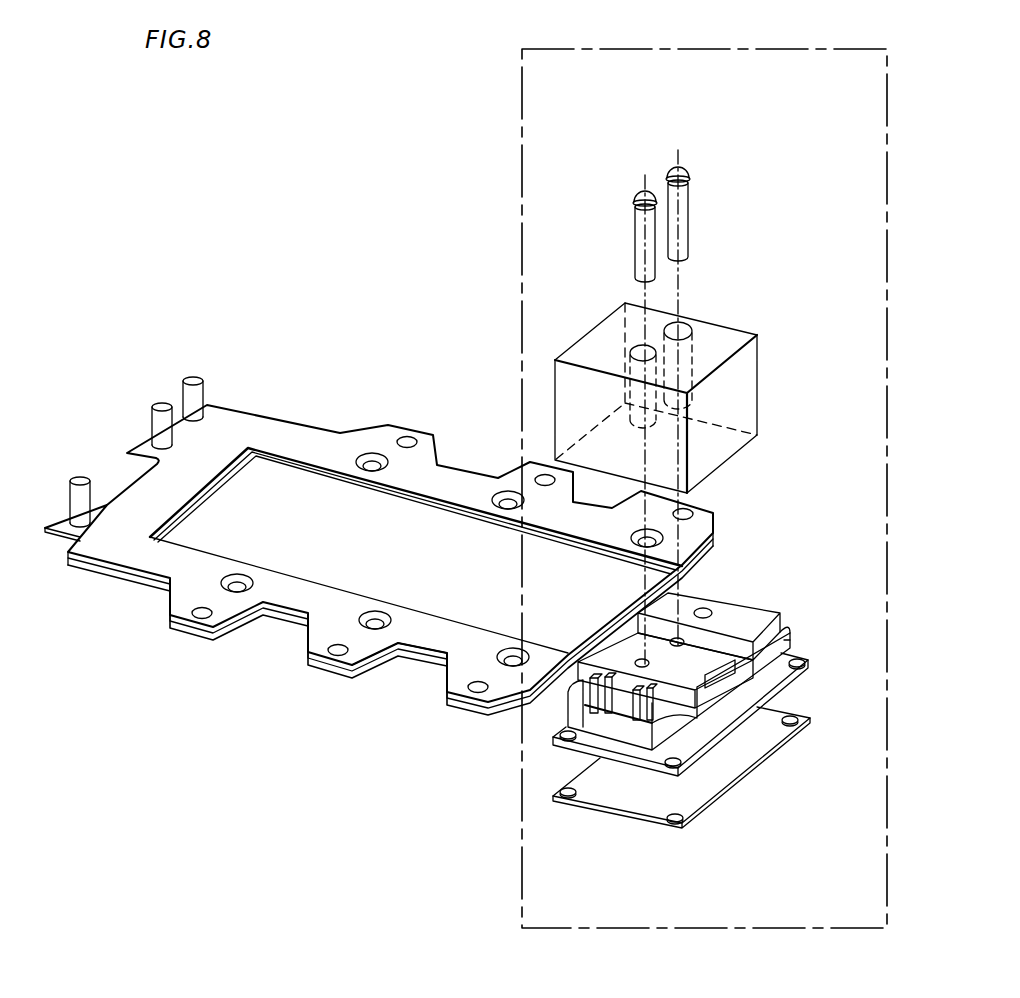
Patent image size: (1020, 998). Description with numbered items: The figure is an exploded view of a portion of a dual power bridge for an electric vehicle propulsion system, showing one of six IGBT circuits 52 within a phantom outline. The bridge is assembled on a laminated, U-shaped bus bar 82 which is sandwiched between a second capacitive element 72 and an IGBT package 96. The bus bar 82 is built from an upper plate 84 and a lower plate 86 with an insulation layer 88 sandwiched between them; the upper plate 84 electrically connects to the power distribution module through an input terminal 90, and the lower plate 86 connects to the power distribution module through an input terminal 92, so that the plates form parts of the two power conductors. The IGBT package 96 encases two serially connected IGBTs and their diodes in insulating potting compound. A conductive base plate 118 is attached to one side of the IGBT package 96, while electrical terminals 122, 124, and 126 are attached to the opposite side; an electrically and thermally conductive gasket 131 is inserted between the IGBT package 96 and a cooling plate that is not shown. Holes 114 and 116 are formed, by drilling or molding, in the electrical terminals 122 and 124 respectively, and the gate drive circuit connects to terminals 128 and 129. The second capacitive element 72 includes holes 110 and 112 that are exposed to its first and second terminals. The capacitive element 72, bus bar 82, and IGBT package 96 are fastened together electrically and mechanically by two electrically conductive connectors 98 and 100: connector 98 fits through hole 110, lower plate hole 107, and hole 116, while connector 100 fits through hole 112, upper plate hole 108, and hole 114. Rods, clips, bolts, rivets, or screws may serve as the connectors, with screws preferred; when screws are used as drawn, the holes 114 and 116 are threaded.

The IGBT circuit 52 is at (530, 898).
The second capacitive element 72 is at (679, 391).
The laminated bus bar 82 is at (118, 620).
The upper plate 84 is at (228, 613).
The lower plate 86 is at (456, 513).
The insulation layer 88 is at (424, 660).
The input terminal 90 is at (183, 384).
The input terminal 92 is at (70, 488).
The IGBT package 96 is at (659, 709).
The electrically conductive connector 98 is at (688, 208).
The electrically conductive connector 100 is at (638, 238).
The lower plate hole 107 is at (690, 510).
The upper plate hole 108 is at (630, 538).
The hole 110 is at (683, 318).
The hole 112 is at (632, 346).
The hole 114 is at (640, 656).
The hole 116 is at (690, 642).
The conductive base plate 118 is at (803, 677).
The electrical terminal 122 is at (722, 662).
The electrical terminal 124 is at (686, 709).
The electrical terminal 126 is at (780, 648).
The terminal 128 is at (572, 700).
The terminal 129 is at (663, 720).
The electrically and thermally conductive gasket 131 is at (630, 802).